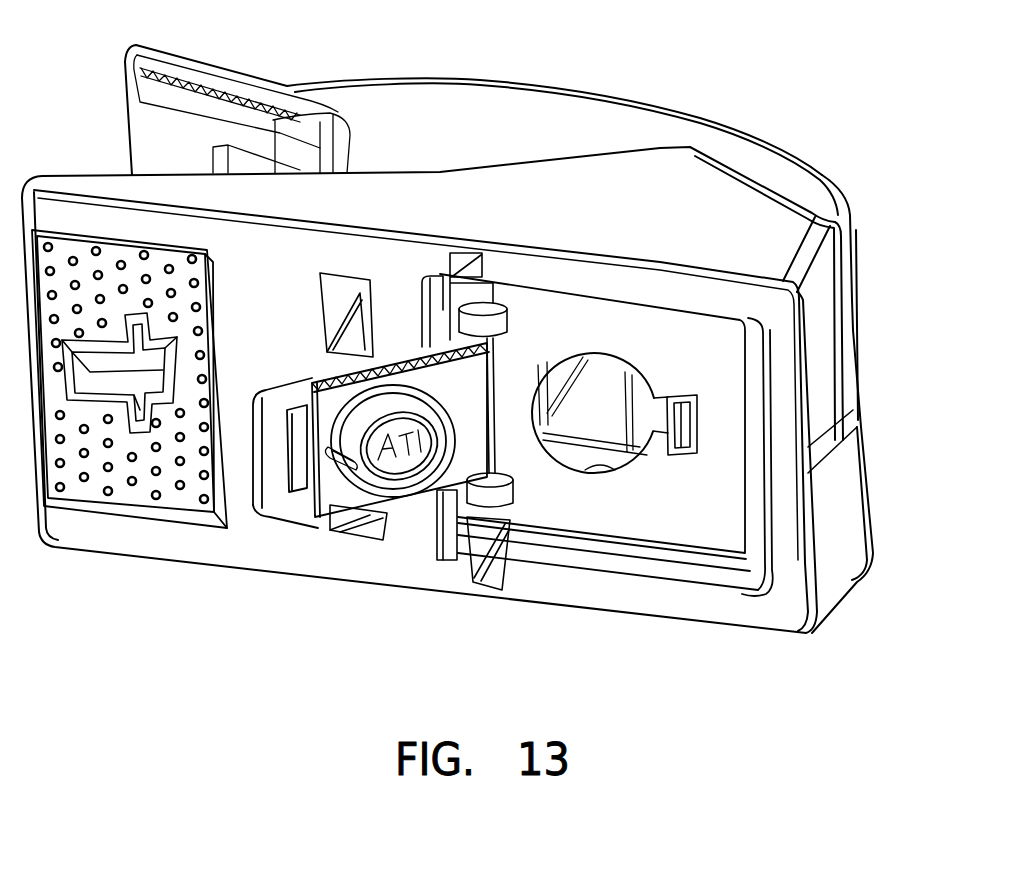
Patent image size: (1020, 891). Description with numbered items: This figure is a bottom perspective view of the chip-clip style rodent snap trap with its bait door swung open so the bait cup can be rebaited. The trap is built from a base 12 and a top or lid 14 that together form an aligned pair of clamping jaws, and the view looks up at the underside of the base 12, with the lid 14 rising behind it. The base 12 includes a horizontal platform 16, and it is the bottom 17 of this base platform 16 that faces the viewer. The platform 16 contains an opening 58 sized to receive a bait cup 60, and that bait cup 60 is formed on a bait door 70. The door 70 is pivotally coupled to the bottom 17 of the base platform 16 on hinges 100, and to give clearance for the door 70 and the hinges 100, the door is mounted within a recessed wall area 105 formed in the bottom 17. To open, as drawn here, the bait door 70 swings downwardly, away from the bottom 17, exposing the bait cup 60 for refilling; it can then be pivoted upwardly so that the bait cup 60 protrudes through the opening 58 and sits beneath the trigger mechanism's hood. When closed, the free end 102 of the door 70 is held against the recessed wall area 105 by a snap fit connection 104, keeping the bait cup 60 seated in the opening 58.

The base 12 is at (856, 596).
The top or lid 14 is at (742, 125).
The horizontal platform 16 is at (791, 607).
The bottom of the base platform 17 is at (279, 313).
The opening 58 is at (597, 457).
The bait cup 60 is at (427, 510).
The bait door 70 is at (337, 507).
The hinges 100 is at (487, 318).
The free end 102 is at (280, 507).
The snap fit connection 104 is at (670, 457).
The recessed wall area 105 is at (801, 352).